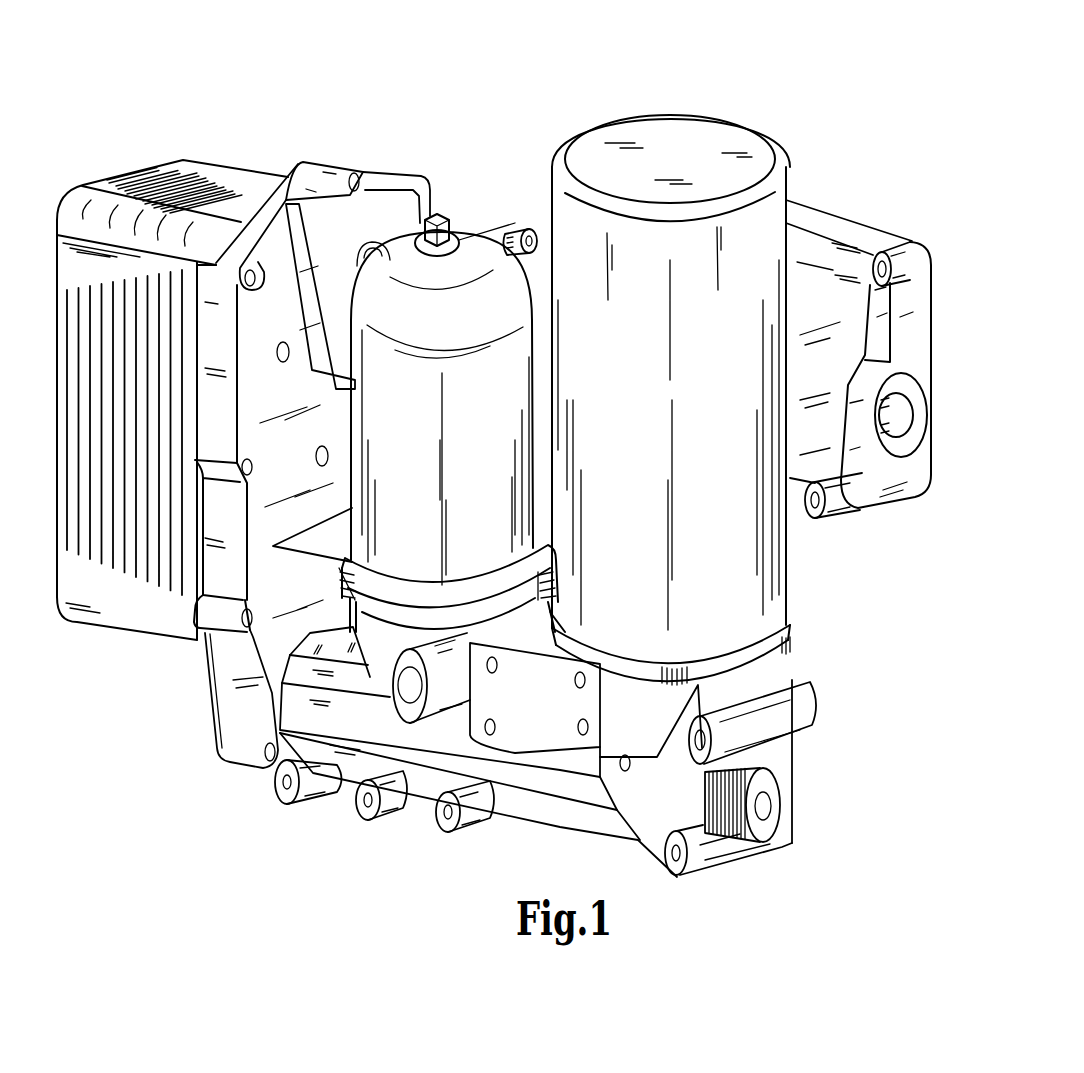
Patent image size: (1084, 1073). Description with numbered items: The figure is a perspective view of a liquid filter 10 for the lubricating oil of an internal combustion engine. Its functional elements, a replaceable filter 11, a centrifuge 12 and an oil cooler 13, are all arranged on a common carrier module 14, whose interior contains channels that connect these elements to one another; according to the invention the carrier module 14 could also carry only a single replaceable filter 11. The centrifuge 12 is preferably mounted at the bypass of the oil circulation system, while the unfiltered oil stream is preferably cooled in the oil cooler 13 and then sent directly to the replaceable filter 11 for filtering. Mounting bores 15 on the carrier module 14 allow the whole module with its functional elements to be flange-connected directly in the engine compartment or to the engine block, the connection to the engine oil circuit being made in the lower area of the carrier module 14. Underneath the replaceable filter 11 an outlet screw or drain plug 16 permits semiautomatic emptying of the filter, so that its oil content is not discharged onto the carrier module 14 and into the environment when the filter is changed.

The liquid filter 10 is at (510, 452).
The replaceable filter 11 is at (741, 148).
The centrifuge 12 is at (468, 232).
The oil cooler 13 is at (219, 176).
The carrier module 14 is at (912, 328).
The mounting bores 15 is at (528, 228).
The outlet screw or drain plug 16 is at (800, 776).